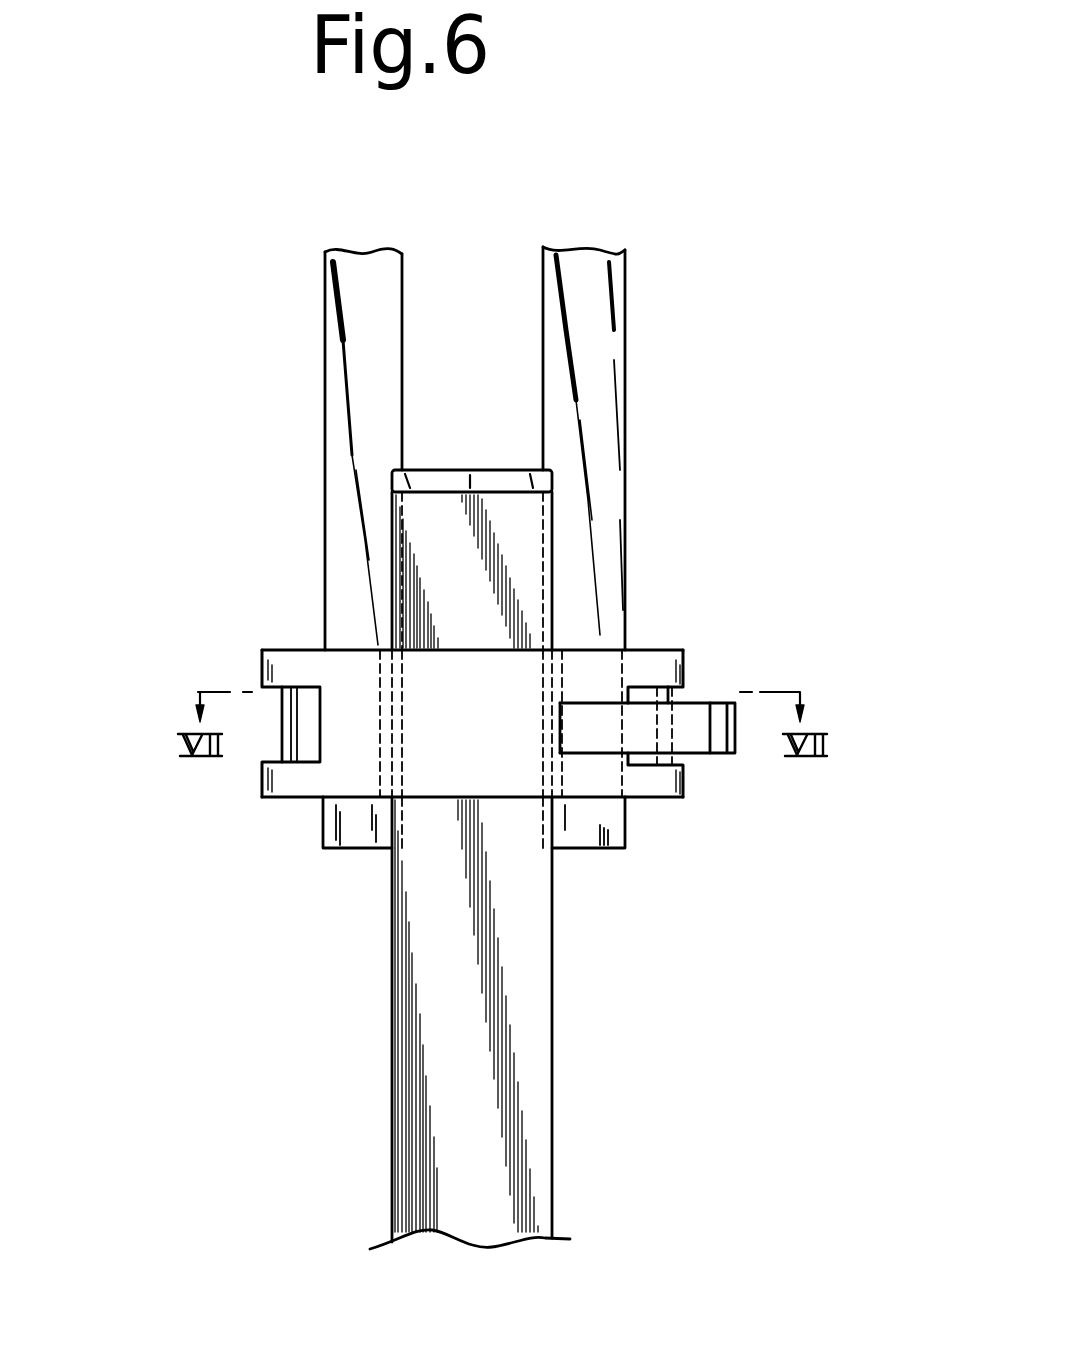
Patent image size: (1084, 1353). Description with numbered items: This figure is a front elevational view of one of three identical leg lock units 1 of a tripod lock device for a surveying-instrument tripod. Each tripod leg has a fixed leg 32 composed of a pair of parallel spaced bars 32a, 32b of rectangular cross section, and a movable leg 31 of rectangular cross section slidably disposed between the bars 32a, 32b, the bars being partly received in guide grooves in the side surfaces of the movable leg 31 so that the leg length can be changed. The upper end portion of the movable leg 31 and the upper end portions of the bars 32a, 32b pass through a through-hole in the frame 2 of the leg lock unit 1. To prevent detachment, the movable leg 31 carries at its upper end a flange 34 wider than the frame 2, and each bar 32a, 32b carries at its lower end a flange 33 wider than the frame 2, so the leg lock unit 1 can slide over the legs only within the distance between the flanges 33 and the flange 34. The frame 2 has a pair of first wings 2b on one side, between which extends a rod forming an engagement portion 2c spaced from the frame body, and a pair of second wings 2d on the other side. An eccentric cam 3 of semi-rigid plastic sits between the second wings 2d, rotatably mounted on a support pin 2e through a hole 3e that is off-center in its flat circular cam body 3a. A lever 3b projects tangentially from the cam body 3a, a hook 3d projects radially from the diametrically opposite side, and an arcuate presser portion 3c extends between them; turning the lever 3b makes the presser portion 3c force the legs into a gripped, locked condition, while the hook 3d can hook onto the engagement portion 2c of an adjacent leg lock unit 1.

The leg lock unit 1 is at (360, 652).
The frame 2 is at (484, 750).
The first wings 2b is at (295, 660).
The engagement portion 2c is at (285, 723).
The second wings 2d is at (658, 663).
The support pin 2e is at (670, 697).
The eccentric cam 3 is at (695, 862).
The cam body 3a is at (687, 740).
The lever 3b is at (590, 738).
The presser portion 3c is at (627, 733).
The hook 3d is at (720, 748).
The hole 3e is at (655, 732).
The movable leg 31 is at (433, 517).
The fixed leg 32 is at (475, 382).
The bar 32a is at (353, 272).
The bar 32b is at (571, 413).
The flange 33 is at (358, 838).
The flange 34 is at (468, 478).